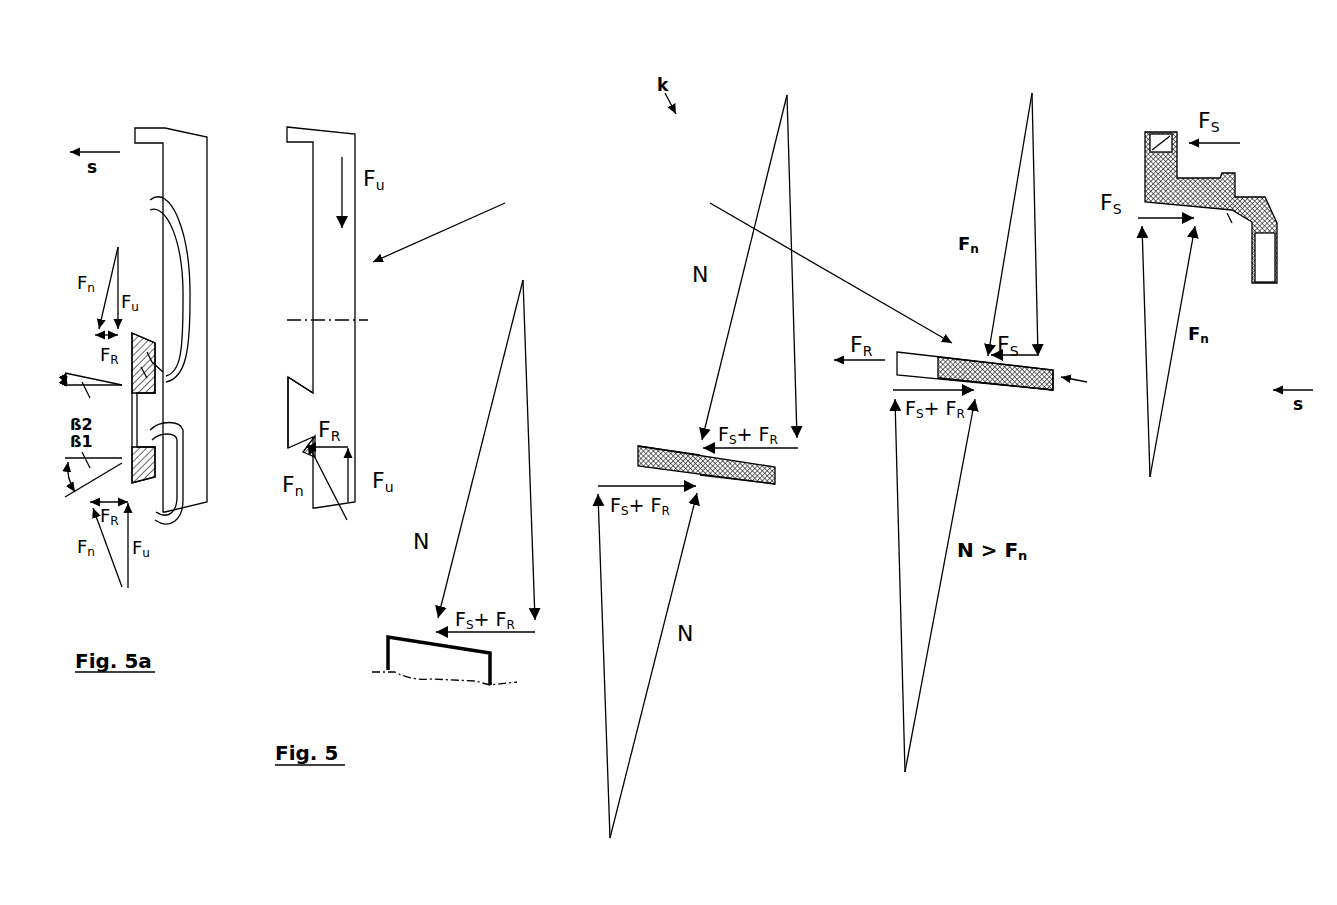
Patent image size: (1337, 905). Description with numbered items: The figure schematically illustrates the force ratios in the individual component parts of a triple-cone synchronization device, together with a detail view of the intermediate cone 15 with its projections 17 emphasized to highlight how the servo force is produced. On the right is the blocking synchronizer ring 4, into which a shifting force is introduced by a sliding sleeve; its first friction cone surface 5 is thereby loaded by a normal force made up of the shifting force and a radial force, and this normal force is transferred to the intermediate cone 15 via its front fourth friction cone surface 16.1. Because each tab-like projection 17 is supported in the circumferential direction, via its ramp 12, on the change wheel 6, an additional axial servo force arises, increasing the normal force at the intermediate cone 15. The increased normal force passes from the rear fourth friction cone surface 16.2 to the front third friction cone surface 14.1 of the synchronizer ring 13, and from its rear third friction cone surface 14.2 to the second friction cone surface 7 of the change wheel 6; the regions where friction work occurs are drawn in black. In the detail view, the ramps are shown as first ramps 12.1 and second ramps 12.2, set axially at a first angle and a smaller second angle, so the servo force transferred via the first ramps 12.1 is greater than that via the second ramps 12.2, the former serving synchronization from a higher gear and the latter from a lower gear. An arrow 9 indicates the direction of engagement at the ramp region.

In FIG. 5, the blocking synchronizer ring 4 is at (1243, 175).
In FIG. 5, the first friction cone surface 5 is at (1233, 210).
In FIG. 5, the change wheel 6 is at (481, 686).
In FIG. 5, the second friction cone surface 7 is at (410, 628).
In FIG. 5, the direction of engagement 9 is at (283, 407).
In FIG. 5, the ramp 12 is at (313, 380).
In FIG. 5A, the first ramp 12.1 is at (178, 523).
In FIG. 5A, the second ramp 12.2 is at (150, 210).
In FIG. 5, the synchronizer ring 13 is at (778, 483).
In FIG. 5, the front third friction cone surface 14.1 is at (657, 443).
In FIG. 5, the rear third friction cone surface 14.2 is at (753, 484).
In FIG. 5A, the intermediate cone 15 is at (211, 124).
In FIG. 5, the intermediate cone 15 is at (743, 287).
In FIG. 5, the front fourth friction cone surface 16.1 is at (327, 124).
In FIG. 5, the rear fourth friction cone surface 16.2 is at (1035, 390).
In FIG. 5, the tab-like projection 17 is at (289, 390).